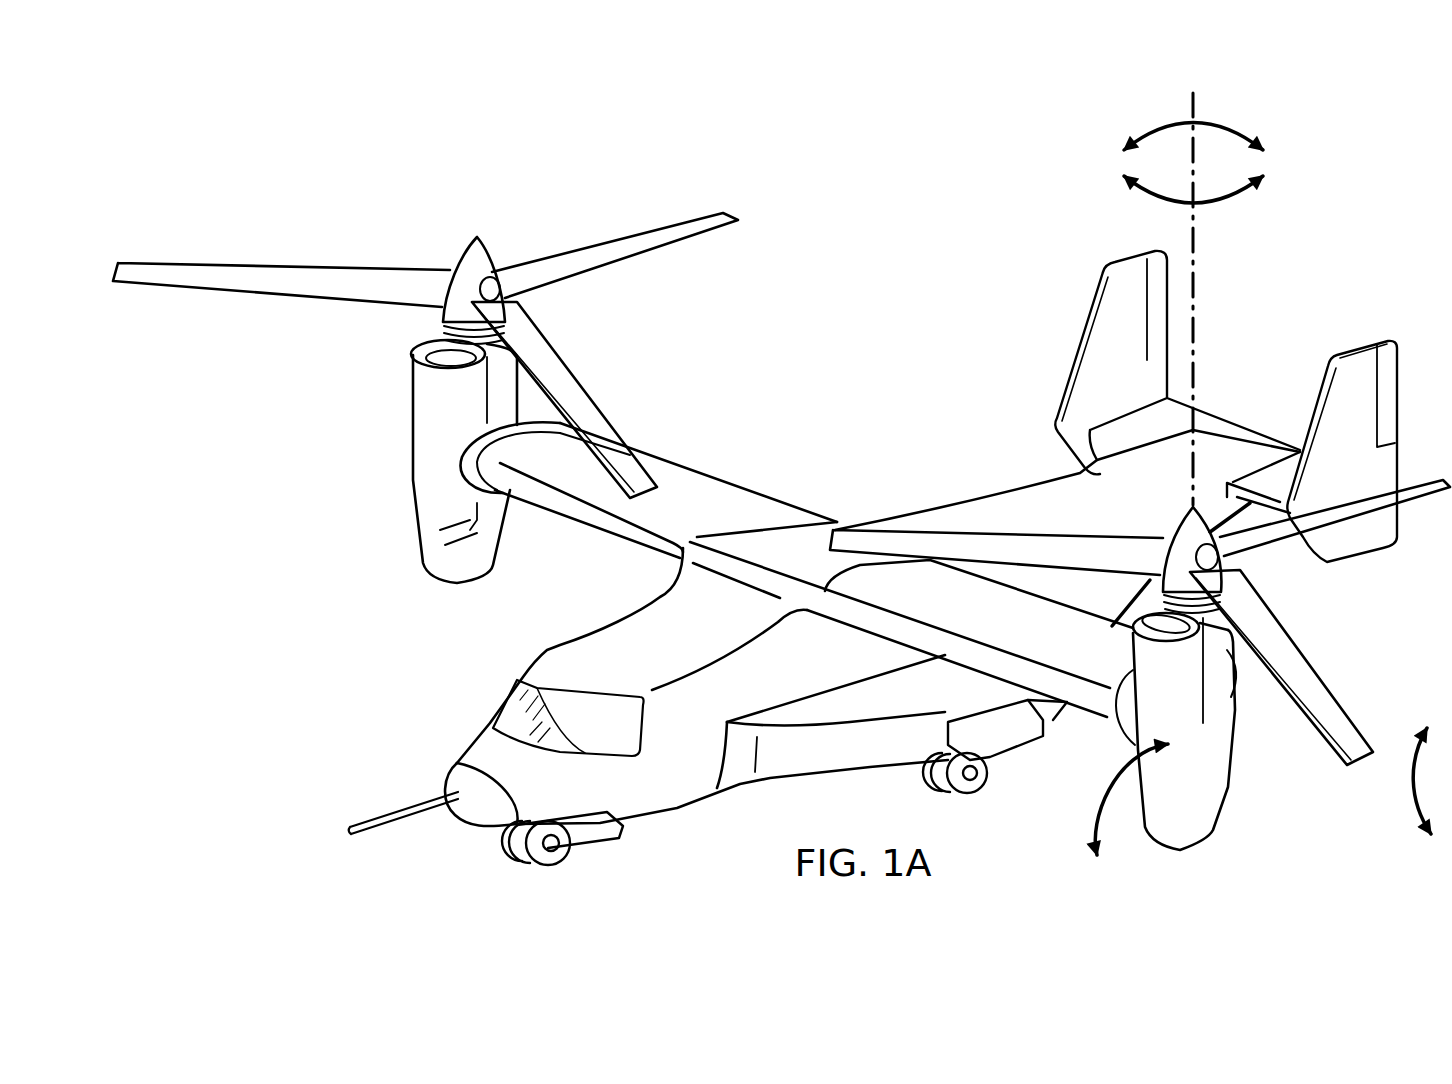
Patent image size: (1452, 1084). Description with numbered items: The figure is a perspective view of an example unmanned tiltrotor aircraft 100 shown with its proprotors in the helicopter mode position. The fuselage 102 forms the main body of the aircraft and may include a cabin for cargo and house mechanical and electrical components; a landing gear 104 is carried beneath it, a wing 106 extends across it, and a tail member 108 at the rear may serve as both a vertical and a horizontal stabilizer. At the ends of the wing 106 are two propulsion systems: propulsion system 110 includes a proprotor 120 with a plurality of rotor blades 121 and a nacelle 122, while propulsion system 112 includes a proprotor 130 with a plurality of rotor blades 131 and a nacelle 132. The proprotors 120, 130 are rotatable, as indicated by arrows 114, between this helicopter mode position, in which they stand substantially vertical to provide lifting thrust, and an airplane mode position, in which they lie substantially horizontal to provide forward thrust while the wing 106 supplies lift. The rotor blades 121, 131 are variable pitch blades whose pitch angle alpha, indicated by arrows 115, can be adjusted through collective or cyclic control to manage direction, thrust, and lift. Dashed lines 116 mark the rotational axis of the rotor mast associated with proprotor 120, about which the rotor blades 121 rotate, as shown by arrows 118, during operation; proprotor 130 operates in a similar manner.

The unmanned tiltrotor aircraft 100 is at (668, 160).
The fuselage 102 is at (677, 810).
The landing gear 104 is at (530, 863).
The wing 106 is at (730, 478).
The tail member 108 is at (1220, 418).
The propulsion system 110 is at (1250, 880).
The propulsion system 112 is at (406, 618).
The arrows 114 is at (1108, 784).
The arrows 115 is at (1412, 780).
The rotational axis 116 is at (1197, 338).
The arrows 118 is at (1217, 120).
The proprotor 120 is at (1175, 535).
The rotor blades 121 is at (1307, 660).
The nacelle 122 is at (1232, 792).
The proprotor 130 is at (462, 247).
The rotor blades 131 is at (623, 262).
The nacelle 132 is at (411, 465).